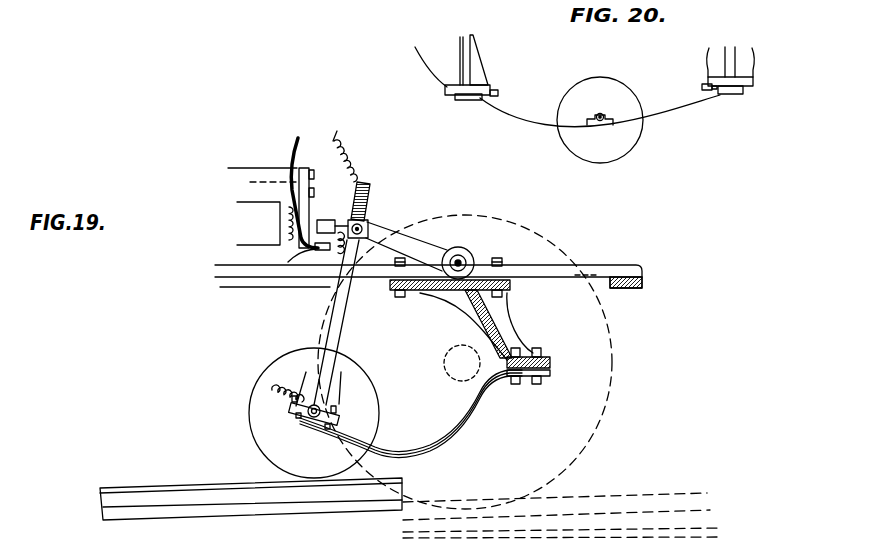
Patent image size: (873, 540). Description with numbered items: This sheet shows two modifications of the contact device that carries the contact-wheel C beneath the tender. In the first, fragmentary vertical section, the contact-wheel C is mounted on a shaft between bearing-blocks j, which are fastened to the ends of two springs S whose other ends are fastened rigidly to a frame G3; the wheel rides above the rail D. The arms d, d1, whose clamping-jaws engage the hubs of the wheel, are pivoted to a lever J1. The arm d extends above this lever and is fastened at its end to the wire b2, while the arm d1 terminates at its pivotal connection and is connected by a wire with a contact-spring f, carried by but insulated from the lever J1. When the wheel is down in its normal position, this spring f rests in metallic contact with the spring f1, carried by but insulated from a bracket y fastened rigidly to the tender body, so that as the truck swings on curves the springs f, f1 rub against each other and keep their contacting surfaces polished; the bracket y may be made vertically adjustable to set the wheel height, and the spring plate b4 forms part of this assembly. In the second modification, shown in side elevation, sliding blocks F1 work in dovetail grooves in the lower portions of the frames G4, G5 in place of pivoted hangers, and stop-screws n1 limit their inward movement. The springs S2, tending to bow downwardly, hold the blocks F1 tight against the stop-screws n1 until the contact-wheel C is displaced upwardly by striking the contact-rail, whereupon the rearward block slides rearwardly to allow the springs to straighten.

In FIG. 19, the spring plate b4 is at (305, 192).
In FIG. 19, the wire b2 is at (346, 156).
In FIG. 19, the arm d is at (368, 201).
In FIG. 19, the lever J1 is at (383, 230).
In FIG. 19, the bracket y is at (311, 208).
In FIG. 19, the contact-spring f is at (330, 220).
In FIG. 19, the arm d1 is at (348, 248).
In FIG. 19, the spring f1 is at (323, 249).
In FIG. 19, the frame G3 is at (470, 321).
In FIG. 19, the springs S is at (510, 404).
In FIG. 19, the bearing-blocks j is at (343, 423).
In FIG. 19, the contact-wheel C is at (314, 413).
In FIG. 20, the contact-wheel C is at (600, 120).
In FIG. 19, the rail D is at (251, 487).
In FIG. 20, the frame G5 is at (466, 61).
In FIG. 20, the stop-screws n1 is at (500, 93).
In FIG. 20, the sliding blocks F1 is at (745, 100).
In FIG. 20, the springs S2 is at (600, 112).
In FIG. 20, the frame G4 is at (736, 50).